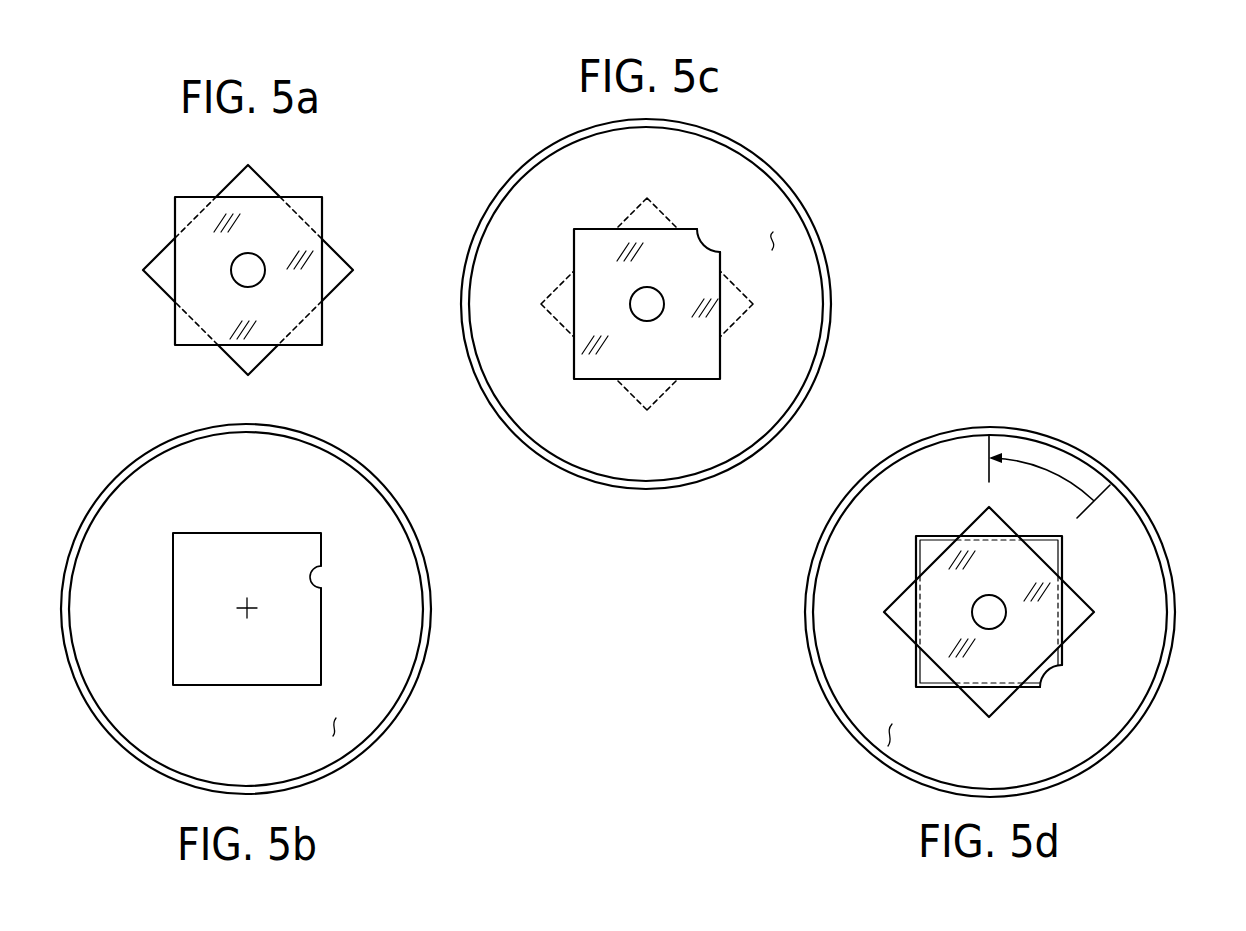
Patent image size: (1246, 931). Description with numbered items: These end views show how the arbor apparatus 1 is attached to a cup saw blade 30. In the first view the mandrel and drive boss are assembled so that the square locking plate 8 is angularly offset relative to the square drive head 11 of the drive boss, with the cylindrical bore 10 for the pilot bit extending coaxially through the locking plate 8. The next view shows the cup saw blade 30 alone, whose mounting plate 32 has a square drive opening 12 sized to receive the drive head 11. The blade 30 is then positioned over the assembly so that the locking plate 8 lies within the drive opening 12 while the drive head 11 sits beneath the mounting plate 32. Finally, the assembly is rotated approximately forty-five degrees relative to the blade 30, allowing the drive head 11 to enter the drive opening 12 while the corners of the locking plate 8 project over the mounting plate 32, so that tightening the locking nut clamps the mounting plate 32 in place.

In FIG. 5A, the arbor apparatus 1 is at (194, 188).
In FIG. 5A, the locking plate 8 is at (289, 317).
In FIG. 5C, the locking plate 8 is at (667, 361).
In FIG. 5B, the locking plate 8 is at (247, 609).
In FIG. 5D, the locking plate 8 is at (1037, 651).
In FIG. 5A, the cylindrical bore 10 is at (240, 275).
In FIG. 5C, the cylindrical bore 10 is at (637, 305).
In FIG. 5A, the drive head 11 is at (343, 255).
In FIG. 5C, the drive head 11 is at (750, 303).
In FIG. 5D, the drive head 11 is at (1050, 550).
In FIG. 5C, the drive opening 12 is at (698, 230).
In FIG. 5B, the drive opening 12 is at (319, 587).
In FIG. 5D, the drive opening 12 is at (1043, 687).
In FIG. 5C, the cup saw blade 30 is at (832, 317).
In FIG. 5B, the cup saw blade 30 is at (91, 509).
In FIG. 5D, the cup saw blade 30 is at (811, 660).
In FIG. 5C, the mounting plate 32 is at (773, 232).
In FIG. 5B, the mounting plate 32 is at (333, 725).
In FIG. 5D, the mounting plate 32 is at (887, 735).